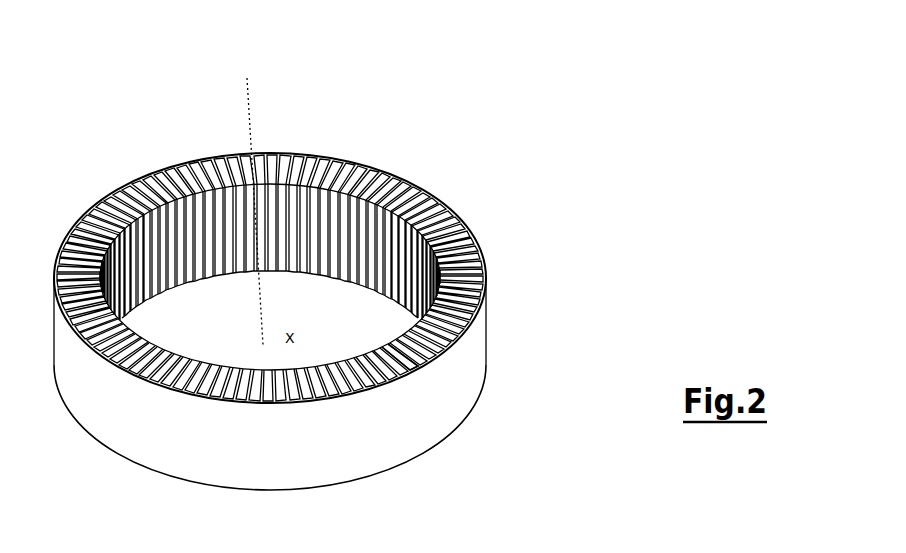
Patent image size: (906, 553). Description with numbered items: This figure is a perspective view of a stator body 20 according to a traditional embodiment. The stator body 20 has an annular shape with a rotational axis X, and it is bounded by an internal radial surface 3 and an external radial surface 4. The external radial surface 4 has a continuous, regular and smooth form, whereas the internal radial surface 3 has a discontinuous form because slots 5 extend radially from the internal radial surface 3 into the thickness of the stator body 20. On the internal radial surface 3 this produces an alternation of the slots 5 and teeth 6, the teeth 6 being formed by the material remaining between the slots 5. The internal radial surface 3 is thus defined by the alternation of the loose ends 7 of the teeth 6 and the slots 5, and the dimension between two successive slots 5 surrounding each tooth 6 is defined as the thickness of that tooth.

The stator body 20 is at (358, 264).
The external radial surface 4 is at (438, 188).
The internal radial surface 3 is at (408, 271).
The slots 5 is at (223, 224).
The teeth 6 is at (314, 208).
The loose ends 7 is at (385, 364).